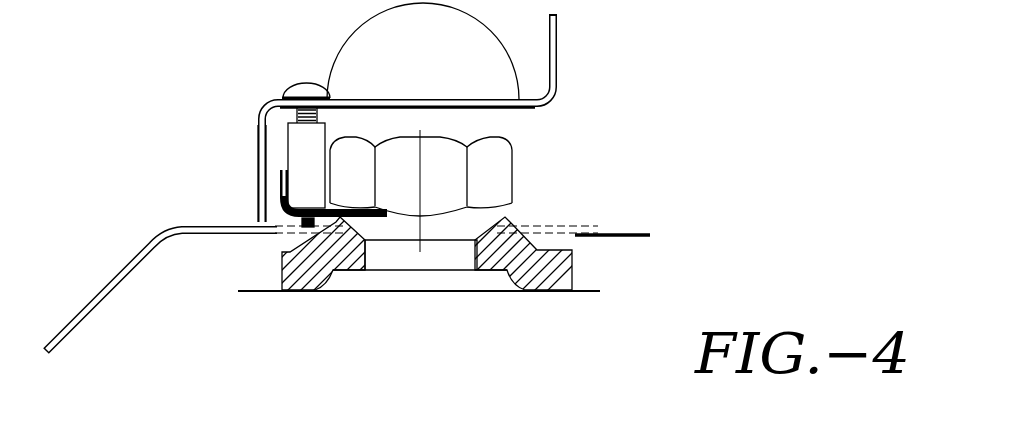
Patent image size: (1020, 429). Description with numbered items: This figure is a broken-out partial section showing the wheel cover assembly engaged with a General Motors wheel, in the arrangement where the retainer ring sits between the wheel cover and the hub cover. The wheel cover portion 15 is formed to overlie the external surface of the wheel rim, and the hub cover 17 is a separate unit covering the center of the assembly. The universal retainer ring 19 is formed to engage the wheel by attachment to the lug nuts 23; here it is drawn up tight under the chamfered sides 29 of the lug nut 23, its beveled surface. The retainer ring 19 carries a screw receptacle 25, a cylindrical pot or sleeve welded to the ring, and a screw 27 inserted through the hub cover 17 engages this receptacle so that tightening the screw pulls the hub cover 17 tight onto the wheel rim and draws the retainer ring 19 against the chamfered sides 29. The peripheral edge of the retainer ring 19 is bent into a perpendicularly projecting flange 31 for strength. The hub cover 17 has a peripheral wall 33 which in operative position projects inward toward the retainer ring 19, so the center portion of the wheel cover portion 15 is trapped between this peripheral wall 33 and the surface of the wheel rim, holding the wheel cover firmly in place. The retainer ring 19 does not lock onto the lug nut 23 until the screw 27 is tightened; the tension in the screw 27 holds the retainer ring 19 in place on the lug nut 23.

The wheel cover portion 15 is at (93, 298).
The hub cover 17 is at (559, 50).
The universal retainer ring 19 is at (303, 230).
The lug nut 23 is at (505, 168).
The screw receptacle 25 is at (286, 138).
The screw 27 is at (303, 87).
The chamfered side 29 is at (504, 218).
The perpendicularly projecting flange 31 is at (284, 173).
The peripheral wall 33 is at (258, 183).